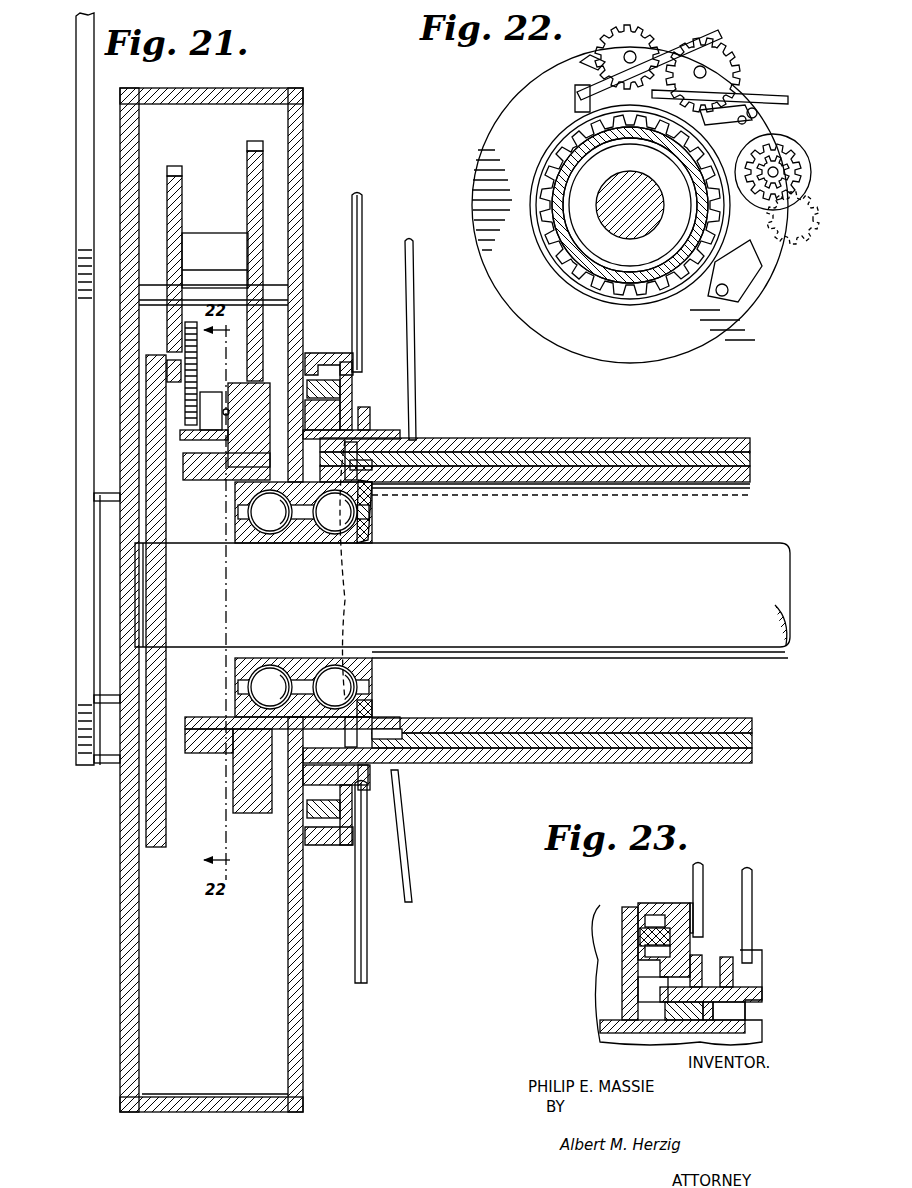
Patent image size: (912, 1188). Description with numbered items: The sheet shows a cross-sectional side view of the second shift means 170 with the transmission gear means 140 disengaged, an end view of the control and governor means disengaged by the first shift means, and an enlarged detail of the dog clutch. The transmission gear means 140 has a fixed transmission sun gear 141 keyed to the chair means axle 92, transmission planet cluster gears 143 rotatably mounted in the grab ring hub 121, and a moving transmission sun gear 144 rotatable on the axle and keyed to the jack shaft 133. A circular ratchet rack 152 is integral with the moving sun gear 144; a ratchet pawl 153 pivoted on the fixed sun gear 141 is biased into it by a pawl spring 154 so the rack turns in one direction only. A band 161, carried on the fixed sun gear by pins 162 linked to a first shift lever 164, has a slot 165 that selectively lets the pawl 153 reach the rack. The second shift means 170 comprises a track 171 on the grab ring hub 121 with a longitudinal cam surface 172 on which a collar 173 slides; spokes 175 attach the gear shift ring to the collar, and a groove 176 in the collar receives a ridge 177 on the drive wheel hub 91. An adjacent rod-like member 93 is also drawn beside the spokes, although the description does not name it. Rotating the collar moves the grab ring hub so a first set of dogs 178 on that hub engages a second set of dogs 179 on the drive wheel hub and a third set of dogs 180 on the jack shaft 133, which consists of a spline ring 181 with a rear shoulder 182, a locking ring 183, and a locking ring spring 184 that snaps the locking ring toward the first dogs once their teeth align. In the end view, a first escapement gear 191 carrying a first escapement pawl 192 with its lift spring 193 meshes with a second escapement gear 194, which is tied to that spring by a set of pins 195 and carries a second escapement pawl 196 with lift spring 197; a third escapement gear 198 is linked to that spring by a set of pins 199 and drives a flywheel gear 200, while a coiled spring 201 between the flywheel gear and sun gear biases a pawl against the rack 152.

In FIG. 21, the drive wheel hub 91 is at (575, 438).
In FIG. 21, the chair means axle 92 is at (462, 570).
In FIG. 22, the chair means axle 92 is at (640, 237).
In FIG. 21, the rod 93 is at (413, 846).
In FIG. 23, the rod 93 is at (752, 902).
In FIG. 21, the grab ring hub 121 is at (303, 180).
In FIG. 23, the grab ring hub 121 is at (632, 910).
In FIG. 21, the jack shaft 133 is at (714, 450).
In FIG. 22, the jack shaft 133 is at (625, 300).
In FIG. 21, the transmission gear means 140 is at (340, 126).
In FIG. 21, the fixed transmission sun gear 141 is at (150, 805).
In FIG. 22, the fixed transmission sun gear 141 is at (486, 152).
In FIG. 21, the transmission planet cluster gears 143 is at (220, 240).
In FIG. 21, the moving transmission sun gear 144 is at (238, 815).
In FIG. 21, the circular ratchet rack 152 is at (220, 780).
In FIG. 22, the circular ratchet rack 152 is at (590, 286).
In FIG. 22, the ratchet pawl 153 is at (740, 300).
In FIG. 22, the pawl spring 154 is at (760, 290).
In FIG. 21, the band 161 is at (190, 768).
In FIG. 22, the band 161 is at (535, 245).
In FIG. 21, the pins 162 is at (110, 704).
In FIG. 21, the first shift lever 164 is at (76, 240).
In FIG. 22, the slot 165 is at (566, 138).
In FIG. 21, the second shift means 170 is at (386, 216).
In FIG. 23, the second shift means 170 is at (764, 866).
In FIG. 21, the track 171 is at (328, 353).
In FIG. 23, the track 171 is at (666, 914).
In FIG. 21, the cam surface 172 is at (340, 386).
In FIG. 23, the cam surface 172 is at (700, 947).
In FIG. 21, the collar 173 is at (358, 342).
In FIG. 23, the collar 173 is at (694, 902).
In FIG. 21, the spokes 175 is at (367, 940).
In FIG. 23, the spokes 175 is at (700, 866).
In FIG. 21, the groove 176 is at (368, 412).
In FIG. 23, the groove 176 is at (692, 976).
In FIG. 21, the ridge 177 is at (378, 432).
In FIG. 23, the ridge 177 is at (706, 990).
In FIG. 21, the first set of dogs 178 is at (302, 545).
In FIG. 23, the first set of dogs 178 is at (650, 1000).
In FIG. 21, the second set of dogs 179 is at (352, 400).
In FIG. 23, the second set of dogs 179 is at (660, 985).
In FIG. 21, the third set of dogs 180 is at (385, 556).
In FIG. 21, the spline ring 181 is at (375, 712).
In FIG. 21, the rear shoulder 182 is at (393, 740).
In FIG. 23, the rear shoulder 182 is at (735, 1030).
In FIG. 21, the locking ring 183 is at (372, 526).
In FIG. 23, the locking ring 183 is at (650, 1010).
In FIG. 21, the locking ring spring 184 is at (370, 470).
In FIG. 23, the locking ring spring 184 is at (713, 1006).
In FIG. 21, the first escapement gear 191 is at (185, 330).
In FIG. 22, the first escapement gear 191 is at (600, 70).
In FIG. 21, the first escapement pawl 192 is at (200, 405).
In FIG. 22, the first escapement pawl 192 is at (575, 102).
In FIG. 22, the lift spring 193 is at (728, 56).
In FIG. 22, the second escapement gear 194 is at (750, 86).
In FIG. 22, the set of pins 195 is at (700, 40).
In FIG. 22, the second escapement pawl 196 is at (718, 71).
In FIG. 22, the lift spring 197 is at (770, 96).
In FIG. 22, the third escapement gear 198 is at (776, 134).
In FIG. 22, the set of pins 199 is at (748, 112).
In FIG. 22, the flywheel gear 200 is at (745, 214).
In FIG. 22, the coiled spring 201 is at (790, 240).